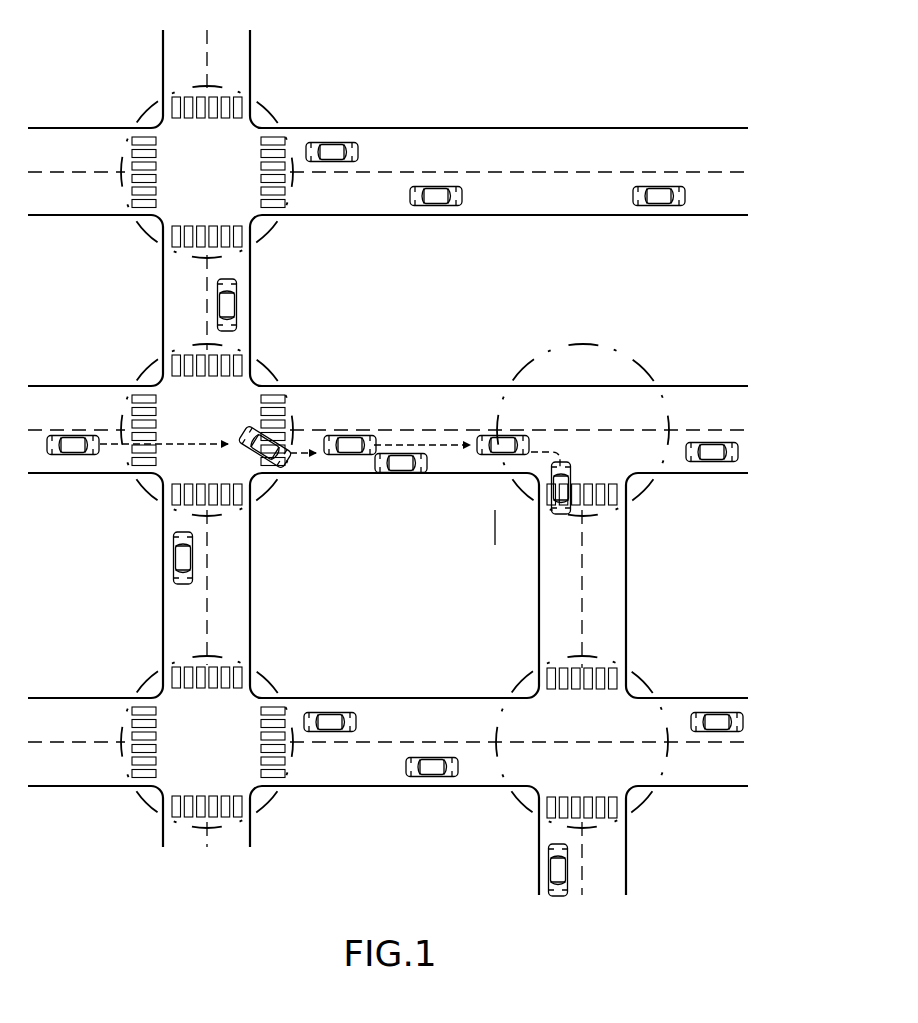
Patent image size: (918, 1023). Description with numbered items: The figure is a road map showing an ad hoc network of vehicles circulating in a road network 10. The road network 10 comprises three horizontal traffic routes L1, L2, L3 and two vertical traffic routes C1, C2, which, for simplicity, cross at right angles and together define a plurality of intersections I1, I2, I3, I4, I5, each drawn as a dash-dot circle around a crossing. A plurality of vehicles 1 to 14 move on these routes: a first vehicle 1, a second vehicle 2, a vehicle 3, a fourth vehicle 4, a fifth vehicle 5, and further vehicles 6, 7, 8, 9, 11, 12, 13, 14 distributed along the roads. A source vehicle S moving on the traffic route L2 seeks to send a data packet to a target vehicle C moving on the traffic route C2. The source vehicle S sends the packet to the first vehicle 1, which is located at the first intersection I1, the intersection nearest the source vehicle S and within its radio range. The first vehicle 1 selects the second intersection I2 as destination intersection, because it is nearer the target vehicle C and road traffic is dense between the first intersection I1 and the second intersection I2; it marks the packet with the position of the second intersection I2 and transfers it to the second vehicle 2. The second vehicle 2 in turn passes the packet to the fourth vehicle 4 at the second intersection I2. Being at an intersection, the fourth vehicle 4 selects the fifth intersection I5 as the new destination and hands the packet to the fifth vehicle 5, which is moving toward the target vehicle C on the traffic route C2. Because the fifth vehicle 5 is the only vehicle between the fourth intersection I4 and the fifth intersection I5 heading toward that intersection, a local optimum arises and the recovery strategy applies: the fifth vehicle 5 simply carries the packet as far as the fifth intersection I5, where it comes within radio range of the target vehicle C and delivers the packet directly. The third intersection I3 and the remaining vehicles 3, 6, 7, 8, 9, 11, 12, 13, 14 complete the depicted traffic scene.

The road network 10 is at (505, 54).
The traffic route L1 is at (60, 128).
The traffic route L2 is at (60, 386).
The traffic route L3 is at (60, 698).
The traffic route C1 is at (253, 37).
The traffic route C2 is at (628, 582).
The first intersection I1 is at (270, 364).
The second intersection I2 is at (648, 364).
The third intersection I3 is at (270, 674).
The fourth intersection I4 is at (270, 104).
The fifth intersection I5 is at (645, 680).
The source vehicle S is at (72, 458).
The first vehicle 1 is at (257, 454).
The second vehicle 2 is at (351, 455).
The vehicle 3 is at (400, 473).
The fourth vehicle 4 is at (495, 455).
The fifth vehicle 5 is at (570, 476).
The vehicle 6 is at (712, 463).
The vehicle 7 is at (720, 712).
The vehicle 8 is at (430, 778).
The vehicle 9 is at (337, 712).
The vehicle 11 is at (173, 558).
The vehicle 12 is at (336, 142).
The vehicle 13 is at (436, 206).
The vehicle 14 is at (660, 206).
The target vehicle C is at (548, 873).